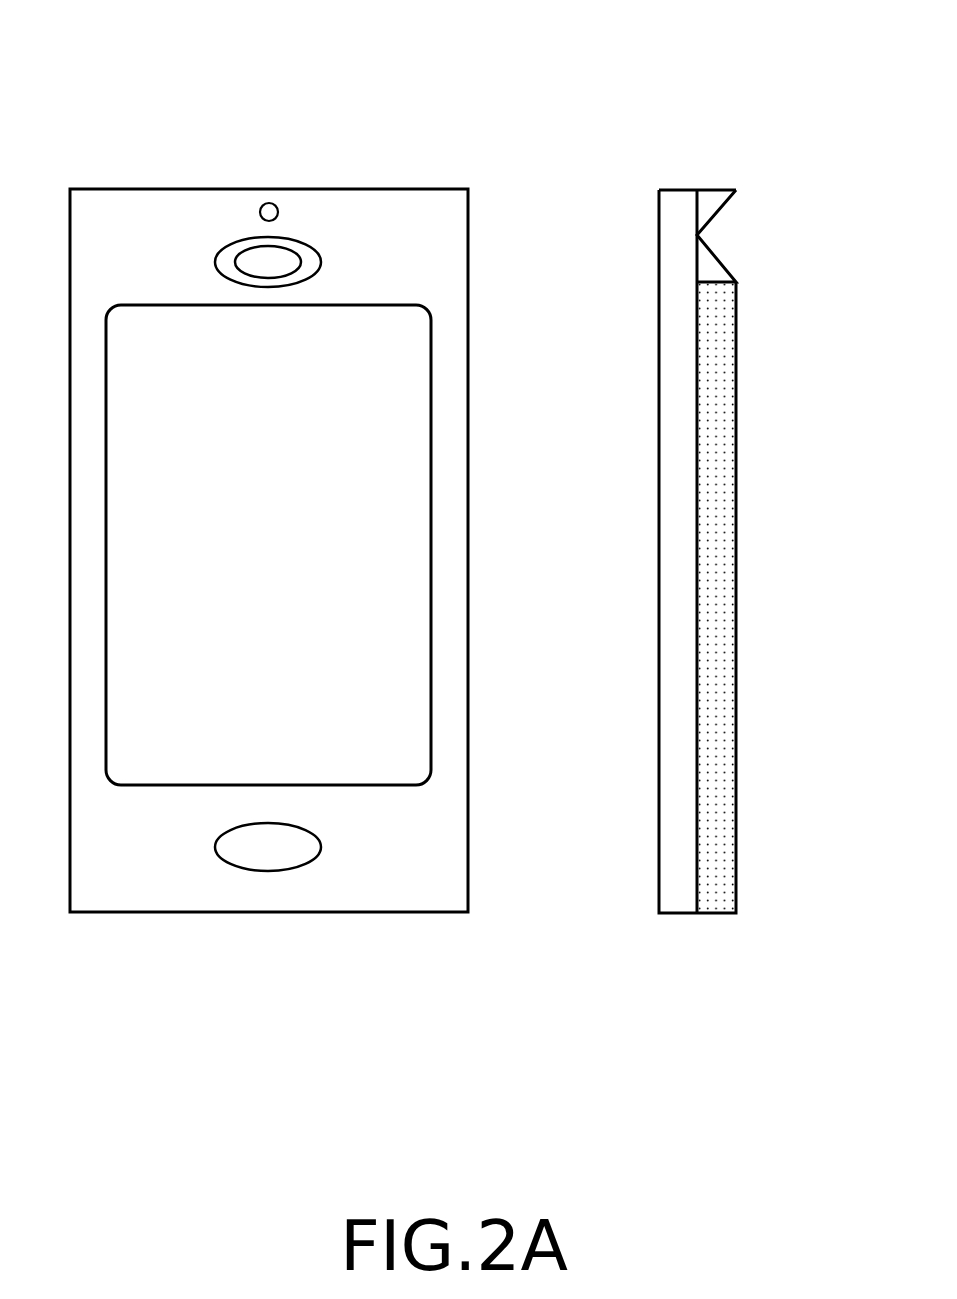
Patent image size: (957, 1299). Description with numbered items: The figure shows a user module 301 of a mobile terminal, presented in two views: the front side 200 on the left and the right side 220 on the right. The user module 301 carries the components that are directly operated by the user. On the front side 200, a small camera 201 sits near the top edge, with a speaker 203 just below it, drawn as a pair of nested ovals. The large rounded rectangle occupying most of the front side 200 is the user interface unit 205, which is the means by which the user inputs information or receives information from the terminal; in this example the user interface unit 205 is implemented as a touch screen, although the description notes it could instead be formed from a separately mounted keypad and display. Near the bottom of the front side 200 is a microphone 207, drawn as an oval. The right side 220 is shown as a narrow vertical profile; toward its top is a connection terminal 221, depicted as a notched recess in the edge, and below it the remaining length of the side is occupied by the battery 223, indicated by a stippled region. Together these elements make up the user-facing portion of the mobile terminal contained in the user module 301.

The user module 301 is at (498, 42).
The front side 200 is at (268, 912).
The camera 201 is at (268, 203).
The speaker 203 is at (319, 264).
The user interface unit 205 is at (383, 580).
The microphone 207 is at (320, 848).
The right side 220 is at (760, 589).
The connection terminal 221 is at (718, 258).
The battery 223 is at (718, 563).